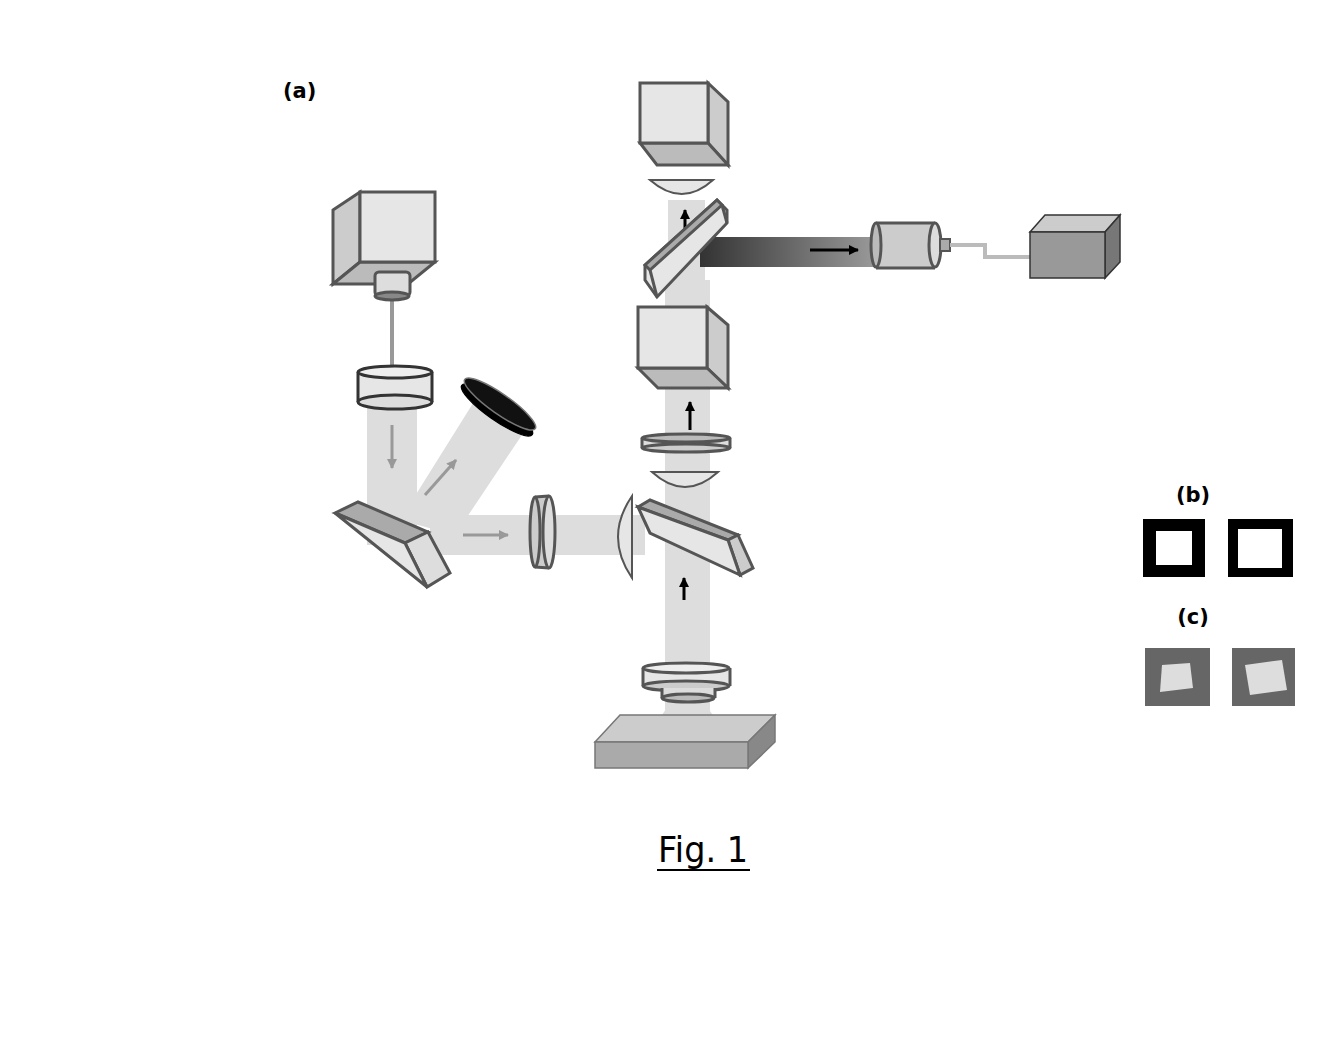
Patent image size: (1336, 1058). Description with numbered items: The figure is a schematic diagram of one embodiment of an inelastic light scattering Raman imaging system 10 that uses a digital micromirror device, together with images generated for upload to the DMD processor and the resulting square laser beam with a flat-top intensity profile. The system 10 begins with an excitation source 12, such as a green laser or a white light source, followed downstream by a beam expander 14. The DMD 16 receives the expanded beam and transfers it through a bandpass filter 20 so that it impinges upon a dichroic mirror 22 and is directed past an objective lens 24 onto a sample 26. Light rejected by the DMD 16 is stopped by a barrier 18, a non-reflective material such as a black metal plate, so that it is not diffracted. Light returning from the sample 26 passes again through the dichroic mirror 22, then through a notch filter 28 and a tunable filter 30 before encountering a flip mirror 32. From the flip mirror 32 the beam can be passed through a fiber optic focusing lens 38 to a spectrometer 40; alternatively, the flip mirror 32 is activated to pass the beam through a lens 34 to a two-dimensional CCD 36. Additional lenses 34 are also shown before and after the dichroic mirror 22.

The Raman imaging system 10 is at (226, 140).
The excitation source 12 is at (330, 220).
The beam expander 14 is at (348, 368).
The DMD 16 is at (358, 553).
The barrier 18 is at (472, 370).
The bandpass filter 20 is at (527, 563).
The dichroic mirror 22 is at (732, 526).
The objective lens 24 is at (713, 662).
The sample 26 is at (732, 760).
The notch filter 28 is at (728, 430).
The tunable filter 30 is at (733, 338).
The flip mirror 32 is at (732, 205).
The lens 34 is at (648, 479).
The 2D-CCD 36 is at (730, 113).
The fiber optic focusing lens 38 is at (896, 222).
The spectrometer 40 is at (1127, 268).